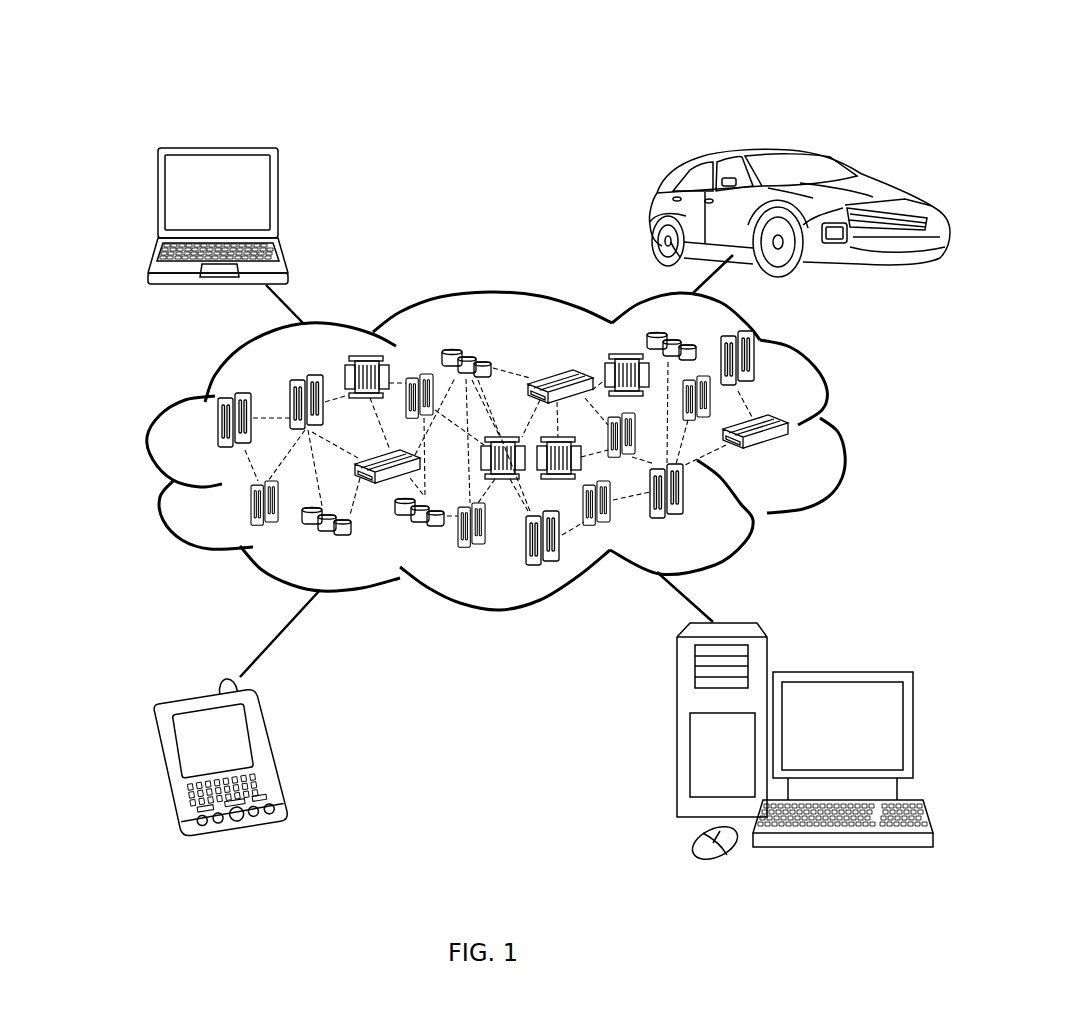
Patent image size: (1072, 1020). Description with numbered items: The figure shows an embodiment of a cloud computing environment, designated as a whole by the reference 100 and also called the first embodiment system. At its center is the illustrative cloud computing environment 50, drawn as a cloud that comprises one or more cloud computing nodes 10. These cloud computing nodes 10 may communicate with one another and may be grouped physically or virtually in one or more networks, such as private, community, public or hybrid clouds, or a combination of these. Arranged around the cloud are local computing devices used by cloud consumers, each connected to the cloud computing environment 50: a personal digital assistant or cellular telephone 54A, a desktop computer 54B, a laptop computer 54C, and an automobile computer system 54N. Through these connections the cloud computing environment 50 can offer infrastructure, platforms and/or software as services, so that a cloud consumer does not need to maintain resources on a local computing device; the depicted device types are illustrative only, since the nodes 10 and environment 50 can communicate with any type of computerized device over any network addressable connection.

The cloud computing environment embodiment 100 is at (1003, 110).
The cloud computing environment 50 is at (844, 431).
The cloud computing nodes 10 is at (795, 455).
The personal digital assistant or cellular telephone 54A is at (272, 749).
The desktop computer 54B is at (842, 672).
The laptop computer 54C is at (278, 200).
The automobile computer system 54N is at (652, 211).